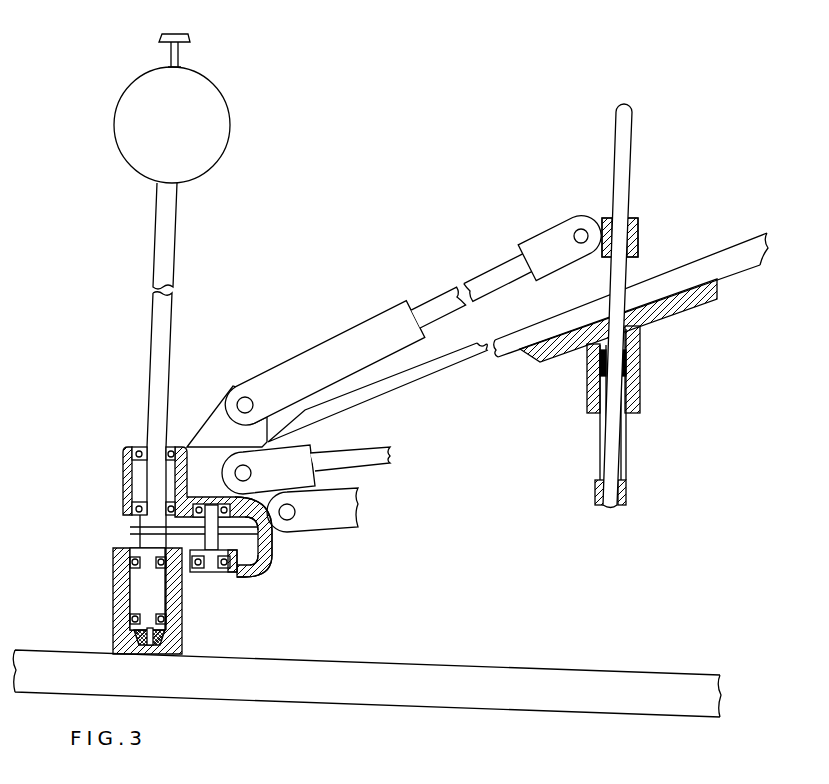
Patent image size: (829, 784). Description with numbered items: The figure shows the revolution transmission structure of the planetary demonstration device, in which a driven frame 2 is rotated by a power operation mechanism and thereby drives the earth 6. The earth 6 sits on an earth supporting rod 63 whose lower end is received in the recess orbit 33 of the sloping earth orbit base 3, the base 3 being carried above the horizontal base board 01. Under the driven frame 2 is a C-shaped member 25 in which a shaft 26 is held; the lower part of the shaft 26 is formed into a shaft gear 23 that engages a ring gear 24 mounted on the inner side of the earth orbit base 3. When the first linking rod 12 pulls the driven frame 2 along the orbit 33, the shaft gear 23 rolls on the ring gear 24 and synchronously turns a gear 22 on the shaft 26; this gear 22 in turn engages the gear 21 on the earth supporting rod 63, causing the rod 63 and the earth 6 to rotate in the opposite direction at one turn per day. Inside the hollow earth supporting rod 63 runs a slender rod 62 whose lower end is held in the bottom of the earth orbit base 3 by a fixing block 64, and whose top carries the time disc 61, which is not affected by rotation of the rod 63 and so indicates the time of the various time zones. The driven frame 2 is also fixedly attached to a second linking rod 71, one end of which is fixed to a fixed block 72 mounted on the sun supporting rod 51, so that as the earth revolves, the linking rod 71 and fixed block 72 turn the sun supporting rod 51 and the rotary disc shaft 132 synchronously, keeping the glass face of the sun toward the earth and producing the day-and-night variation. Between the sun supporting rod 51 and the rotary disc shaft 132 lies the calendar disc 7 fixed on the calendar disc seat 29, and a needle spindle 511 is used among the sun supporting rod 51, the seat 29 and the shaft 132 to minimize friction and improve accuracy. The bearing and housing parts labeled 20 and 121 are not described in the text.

The base board 01 is at (457, 677).
The driven frame 2 is at (213, 420).
The earth orbit base 3 is at (118, 603).
The earth 6 is at (218, 92).
The calendar disc 7 is at (418, 377).
The first linking rod 12 is at (382, 455).
The bearing housing 20 is at (125, 476).
The gear 21 is at (132, 527).
The gear 22 is at (242, 535).
The shaft gear 23 is at (233, 566).
The ring gear 24 is at (188, 570).
The C-shaped member 25 is at (250, 572).
The shaft 26 is at (217, 538).
The calendar disc seat 29 is at (640, 345).
The recess orbit 33 is at (130, 582).
The sun supporting rod 51 is at (625, 155).
The time disc 61 is at (189, 38).
The slender rod 62 is at (178, 51).
The earth supporting rod 63 is at (168, 230).
The fixing block 64 is at (113, 632).
The second linking rod 71 is at (370, 330).
The fixed block 72 is at (638, 230).
The link 121 is at (348, 513).
The rotary disc shaft 132 is at (622, 498).
The needle spindle 511 is at (627, 370).